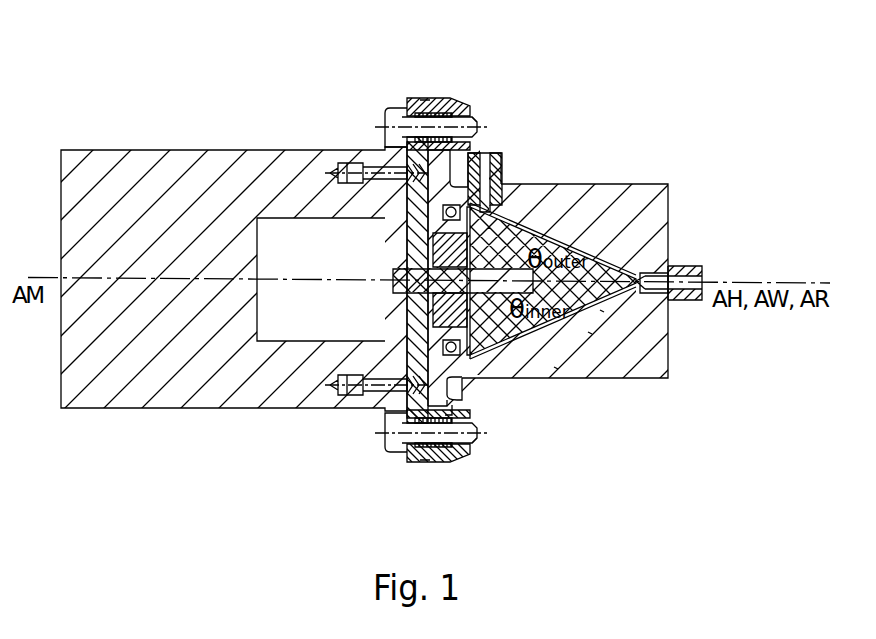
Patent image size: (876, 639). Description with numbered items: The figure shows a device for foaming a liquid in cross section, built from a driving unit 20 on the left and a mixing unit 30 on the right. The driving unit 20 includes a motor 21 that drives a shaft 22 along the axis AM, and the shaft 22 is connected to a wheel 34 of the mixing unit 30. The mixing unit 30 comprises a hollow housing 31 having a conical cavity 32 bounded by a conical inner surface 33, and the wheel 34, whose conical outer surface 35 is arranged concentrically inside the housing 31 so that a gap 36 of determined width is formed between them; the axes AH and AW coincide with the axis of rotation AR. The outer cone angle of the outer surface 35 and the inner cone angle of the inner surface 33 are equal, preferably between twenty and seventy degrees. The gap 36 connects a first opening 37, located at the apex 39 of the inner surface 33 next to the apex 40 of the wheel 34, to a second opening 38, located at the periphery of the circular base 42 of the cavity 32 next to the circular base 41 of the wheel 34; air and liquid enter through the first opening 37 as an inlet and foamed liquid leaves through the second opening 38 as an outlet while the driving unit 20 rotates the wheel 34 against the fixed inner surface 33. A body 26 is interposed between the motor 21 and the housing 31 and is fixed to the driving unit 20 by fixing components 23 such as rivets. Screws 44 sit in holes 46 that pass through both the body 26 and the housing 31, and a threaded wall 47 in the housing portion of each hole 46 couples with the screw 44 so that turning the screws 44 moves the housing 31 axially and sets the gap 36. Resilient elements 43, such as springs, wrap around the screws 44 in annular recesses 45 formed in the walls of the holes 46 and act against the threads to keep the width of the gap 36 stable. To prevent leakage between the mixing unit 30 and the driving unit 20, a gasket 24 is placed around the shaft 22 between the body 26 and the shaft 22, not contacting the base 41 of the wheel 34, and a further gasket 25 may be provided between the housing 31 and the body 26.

The driving unit 20 is at (115, 116).
The motor 21 is at (297, 272).
The shaft 22 is at (540, 292).
The fixing components 23 is at (372, 160).
The gasket 24 is at (405, 302).
The further gasket 25 is at (440, 250).
The body 26 is at (420, 210).
The mixing unit 30 is at (675, 108).
The hollow housing 31 is at (660, 211).
The cavity 32 is at (585, 240).
The inner surface 33 is at (600, 267).
The wheel 34 is at (556, 368).
The outer surface 35 is at (590, 333).
The gap 36 is at (530, 215).
The first opening 37 is at (697, 266).
The second opening 38 is at (500, 200).
The apex 39 is at (653, 270).
The apex 40 is at (604, 311).
The circular base 41 is at (550, 378).
The circular base 42 is at (412, 238).
The resilient elements 43 is at (432, 98).
The screws 44 is at (393, 113).
The annular recesses 45 is at (425, 103).
The holes 46 is at (482, 134).
The threaded wall 47 is at (502, 167).